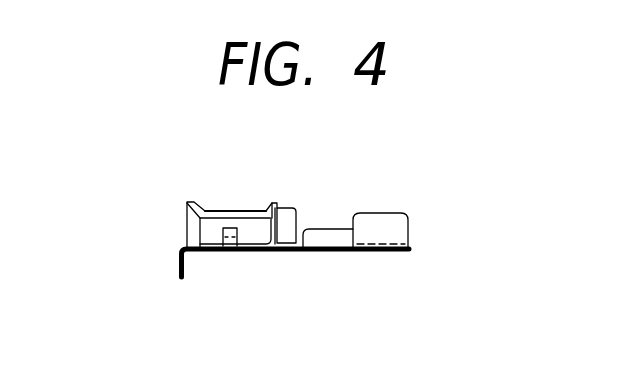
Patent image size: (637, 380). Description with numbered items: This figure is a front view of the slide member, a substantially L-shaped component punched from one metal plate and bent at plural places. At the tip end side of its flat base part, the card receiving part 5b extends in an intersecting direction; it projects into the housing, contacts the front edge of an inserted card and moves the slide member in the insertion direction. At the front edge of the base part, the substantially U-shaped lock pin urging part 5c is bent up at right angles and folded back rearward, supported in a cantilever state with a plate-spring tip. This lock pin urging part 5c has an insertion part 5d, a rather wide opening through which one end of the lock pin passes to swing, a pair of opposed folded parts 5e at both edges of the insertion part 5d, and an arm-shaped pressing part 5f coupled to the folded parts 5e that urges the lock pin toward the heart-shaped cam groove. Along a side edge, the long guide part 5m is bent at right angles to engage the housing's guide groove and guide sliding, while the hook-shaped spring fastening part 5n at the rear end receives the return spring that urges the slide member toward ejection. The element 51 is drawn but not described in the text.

The card receiving part 5b is at (383, 228).
The lock pin urging part 5c is at (193, 203).
The insertion part 5d is at (257, 237).
The folded parts 5e is at (187, 221).
The pressing part 5f is at (243, 211).
The guide part 5m is at (178, 267).
The spring fastening part 5n is at (228, 246).
The tab 51 is at (290, 217).